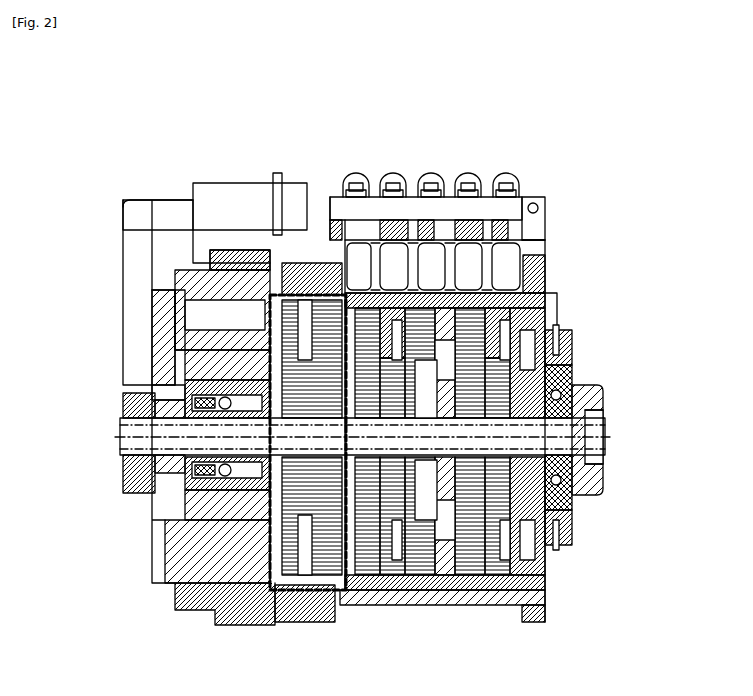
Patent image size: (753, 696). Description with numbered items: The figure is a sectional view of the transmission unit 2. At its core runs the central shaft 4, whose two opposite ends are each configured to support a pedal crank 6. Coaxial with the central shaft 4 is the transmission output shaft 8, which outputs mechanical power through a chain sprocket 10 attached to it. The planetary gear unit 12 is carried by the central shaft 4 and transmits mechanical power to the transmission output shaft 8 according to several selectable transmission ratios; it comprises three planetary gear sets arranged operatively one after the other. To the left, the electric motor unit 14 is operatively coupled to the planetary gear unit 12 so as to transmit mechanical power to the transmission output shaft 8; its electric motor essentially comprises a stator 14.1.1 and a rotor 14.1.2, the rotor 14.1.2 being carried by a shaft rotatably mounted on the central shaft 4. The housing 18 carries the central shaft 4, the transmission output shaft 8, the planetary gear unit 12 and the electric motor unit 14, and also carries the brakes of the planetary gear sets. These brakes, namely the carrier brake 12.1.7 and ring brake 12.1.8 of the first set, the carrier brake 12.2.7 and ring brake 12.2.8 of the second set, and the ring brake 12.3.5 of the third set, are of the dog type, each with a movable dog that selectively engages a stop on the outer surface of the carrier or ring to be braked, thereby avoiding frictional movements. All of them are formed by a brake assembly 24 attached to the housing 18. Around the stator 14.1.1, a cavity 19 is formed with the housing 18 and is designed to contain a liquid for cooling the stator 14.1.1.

The transmission unit 2 is at (85, 233).
The central shaft 4 is at (130, 452).
The pedal crank 6 is at (123, 262).
The transmission output shaft 8 is at (565, 388).
The chain sprocket 10 is at (572, 360).
The planetary gear unit 12 is at (545, 630).
The electric motor unit 14 is at (153, 169).
The housing 18 is at (547, 293).
The cavity 19 is at (235, 268).
The brake assembly 24 is at (576, 169).
The carrier brake 12.1.7 is at (356, 172).
The ring brake 12.1.8 is at (391, 172).
The carrier brake 12.2.7 is at (431, 172).
The ring brake 12.2.8 is at (468, 172).
The ring brake 12.3.5 is at (506, 172).
The stator 14.1.1 is at (180, 333).
The rotor 14.1.2 is at (155, 393).